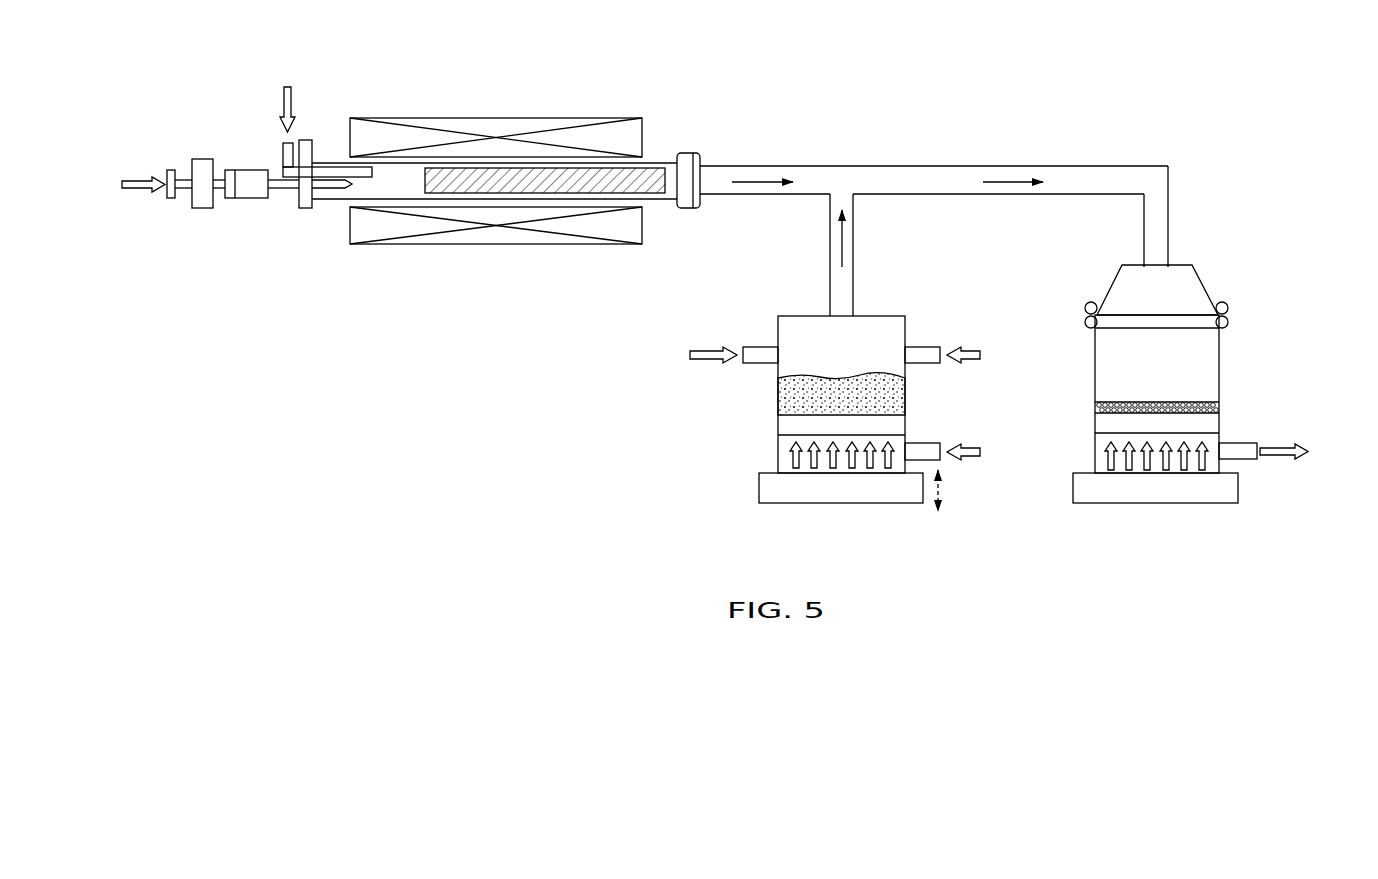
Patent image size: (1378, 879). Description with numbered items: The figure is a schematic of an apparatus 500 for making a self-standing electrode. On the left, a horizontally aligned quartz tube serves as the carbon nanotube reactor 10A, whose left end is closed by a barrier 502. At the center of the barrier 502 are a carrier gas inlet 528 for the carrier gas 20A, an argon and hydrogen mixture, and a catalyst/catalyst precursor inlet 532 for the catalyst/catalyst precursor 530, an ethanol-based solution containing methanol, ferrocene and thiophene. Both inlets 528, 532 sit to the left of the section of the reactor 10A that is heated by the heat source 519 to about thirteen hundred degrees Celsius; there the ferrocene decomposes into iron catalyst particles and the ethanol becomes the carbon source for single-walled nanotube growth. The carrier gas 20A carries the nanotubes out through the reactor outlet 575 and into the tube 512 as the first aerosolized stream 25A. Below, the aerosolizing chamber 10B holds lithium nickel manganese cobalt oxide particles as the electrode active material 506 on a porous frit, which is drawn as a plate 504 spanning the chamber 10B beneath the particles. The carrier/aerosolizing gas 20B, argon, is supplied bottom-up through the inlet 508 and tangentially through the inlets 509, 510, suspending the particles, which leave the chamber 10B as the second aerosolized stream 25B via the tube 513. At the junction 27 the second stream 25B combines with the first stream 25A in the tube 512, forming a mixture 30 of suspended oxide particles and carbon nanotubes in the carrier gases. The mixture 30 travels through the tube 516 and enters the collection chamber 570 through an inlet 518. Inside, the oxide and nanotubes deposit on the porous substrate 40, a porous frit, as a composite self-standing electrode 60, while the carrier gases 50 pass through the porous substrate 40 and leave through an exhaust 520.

The apparatus 500 is at (1240, 90).
The carbon nanotube reactor 10A is at (477, 108).
The aerosolizing chamber 10B is at (717, 460).
The carrier gas 20A is at (290, 113).
The carrier/aerosolizing gas 20B is at (841, 407).
The barrier 502 is at (308, 136).
The heat source 519 is at (590, 127).
The reactor outlet 575 is at (699, 148).
The tube 512 is at (797, 160).
The junction 27 is at (849, 183).
The mixture 30 is at (1007, 172).
The tube 516 is at (1048, 137).
The tube 513 is at (867, 228).
The first aerosolized stream 25A is at (747, 193).
The second aerosolized stream 25B is at (832, 257).
The inlet 509 is at (758, 345).
The inlet 510 is at (928, 353).
The distributor plate 504 is at (776, 425).
The electrode active material 506 is at (908, 395).
The inlet 508 is at (936, 453).
The inlet 518 is at (1190, 262).
The collection chamber 570 is at (1282, 315).
The composite self-standing electrode 60 is at (1223, 403).
The porous substrate 40 is at (1224, 432).
The carrier gases 50 is at (1300, 452).
The exhaust 520 is at (1261, 463).
The catalyst/catalyst precursor 530 is at (188, 183).
The catalyst/catalyst precursor inlet 532 is at (333, 189).
The carrier gas inlet 528 is at (362, 178).